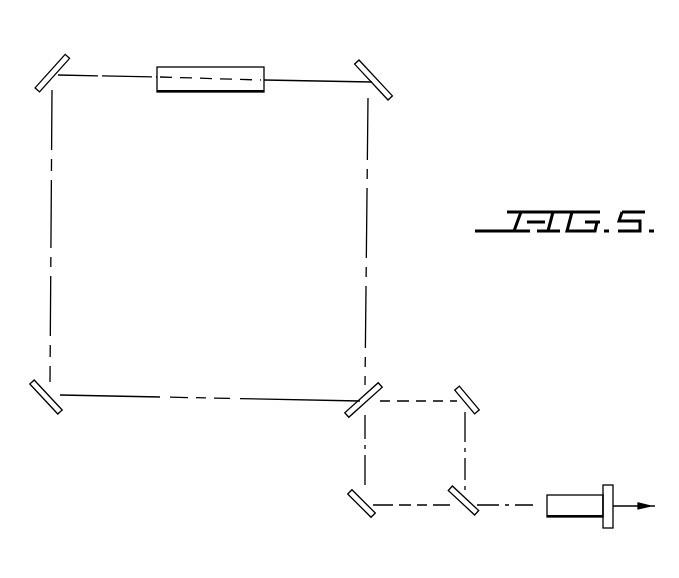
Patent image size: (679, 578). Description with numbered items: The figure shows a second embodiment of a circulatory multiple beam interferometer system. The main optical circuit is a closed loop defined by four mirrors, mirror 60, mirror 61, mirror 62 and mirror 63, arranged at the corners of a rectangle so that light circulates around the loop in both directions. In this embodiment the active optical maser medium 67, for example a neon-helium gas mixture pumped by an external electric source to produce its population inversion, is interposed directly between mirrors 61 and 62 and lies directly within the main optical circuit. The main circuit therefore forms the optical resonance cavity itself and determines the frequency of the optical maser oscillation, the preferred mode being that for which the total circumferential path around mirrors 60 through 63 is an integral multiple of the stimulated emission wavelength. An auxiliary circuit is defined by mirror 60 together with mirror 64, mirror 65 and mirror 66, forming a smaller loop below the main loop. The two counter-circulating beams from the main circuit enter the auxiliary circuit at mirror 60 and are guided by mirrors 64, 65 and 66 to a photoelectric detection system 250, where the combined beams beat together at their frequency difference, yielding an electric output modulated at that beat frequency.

The mirror 60 is at (383, 390).
The mirror 61 is at (385, 81).
The mirror 62 is at (50, 68).
The mirror 63 is at (46, 405).
The mirror 64 is at (471, 393).
The mirror 65 is at (463, 516).
The mirror 66 is at (365, 512).
The active optical maser medium 67 is at (207, 67).
The photoelectric detection system 250 is at (577, 494).